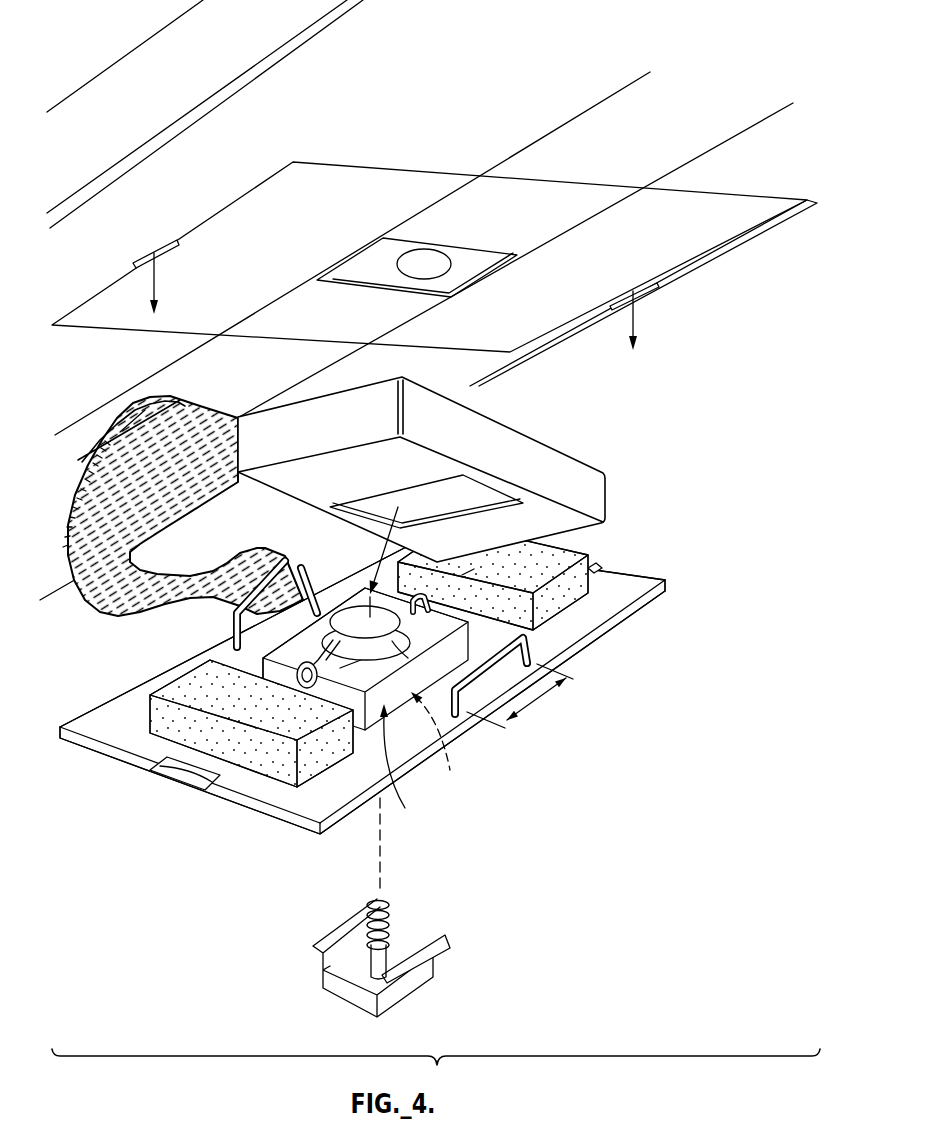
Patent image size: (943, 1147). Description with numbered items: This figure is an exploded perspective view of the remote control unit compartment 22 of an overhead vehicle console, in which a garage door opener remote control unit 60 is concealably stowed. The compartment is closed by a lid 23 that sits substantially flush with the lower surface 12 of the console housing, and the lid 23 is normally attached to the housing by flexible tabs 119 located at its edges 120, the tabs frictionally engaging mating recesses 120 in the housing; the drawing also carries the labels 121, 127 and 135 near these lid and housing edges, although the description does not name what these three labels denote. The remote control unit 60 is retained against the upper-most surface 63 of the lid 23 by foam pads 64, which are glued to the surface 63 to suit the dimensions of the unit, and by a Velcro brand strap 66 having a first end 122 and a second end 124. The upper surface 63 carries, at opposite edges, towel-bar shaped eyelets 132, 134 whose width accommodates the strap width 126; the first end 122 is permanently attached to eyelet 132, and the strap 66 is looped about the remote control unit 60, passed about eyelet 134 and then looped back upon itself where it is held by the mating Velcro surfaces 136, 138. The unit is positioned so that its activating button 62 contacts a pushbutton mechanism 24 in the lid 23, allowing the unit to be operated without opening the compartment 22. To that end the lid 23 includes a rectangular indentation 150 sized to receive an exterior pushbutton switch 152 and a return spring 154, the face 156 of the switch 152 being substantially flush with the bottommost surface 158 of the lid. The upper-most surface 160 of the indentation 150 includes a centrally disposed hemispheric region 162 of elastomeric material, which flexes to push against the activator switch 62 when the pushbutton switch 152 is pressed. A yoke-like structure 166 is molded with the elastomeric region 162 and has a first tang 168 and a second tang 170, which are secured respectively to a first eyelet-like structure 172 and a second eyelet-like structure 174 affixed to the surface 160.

The lower surface 12 is at (105, 320).
The compartment 22 is at (668, 262).
The compartment lid 23 is at (263, 813).
The pushbutton mechanism 24 is at (457, 789).
The remote control unit 60 is at (360, 507).
The activating button 62 is at (465, 507).
The upper-most surface 63 is at (607, 611).
The foam pads 64 is at (300, 765).
The Velcro brand strap 66 is at (140, 616).
The flexible tabs 119 is at (597, 567).
The edges 120 is at (652, 575).
The tabs 121 is at (630, 294).
The first end 122 is at (295, 568).
The second end 124 is at (147, 398).
The strap width 126 is at (100, 609).
The plate edge 127 is at (465, 731).
The towel-bar shaped eyelet 132 is at (320, 580).
The towel-bar shaped eyelet 134 is at (536, 642).
The clip spacing 135 is at (539, 701).
The mating Velcro surface 136 is at (76, 507).
The mating Velcro surface 138 is at (93, 470).
The indentation 150 is at (406, 760).
The exterior pushbutton switch 152 is at (392, 916).
The return spring 154 is at (390, 927).
The face 156 is at (358, 1012).
The bottommost surface 158 is at (657, 596).
The upper-most surface 160 is at (411, 638).
The hemispheric region 162 is at (390, 638).
The yoke-like structure 166 is at (352, 665).
The first tang 168 is at (472, 574).
The second tang 170 is at (320, 636).
The first eyelet-like structure 172 is at (296, 678).
The second eyelet-like structure 174 is at (420, 592).